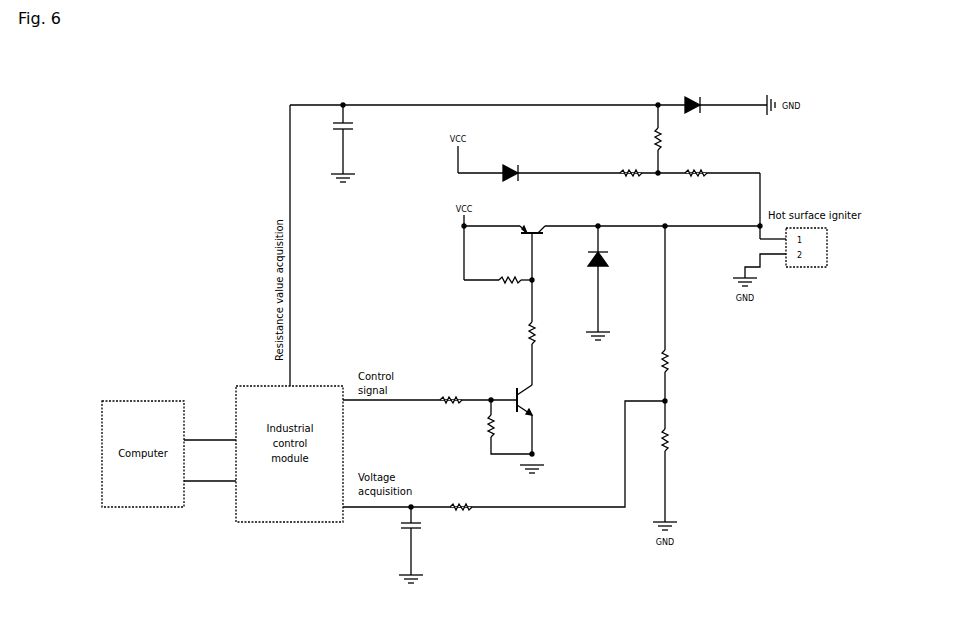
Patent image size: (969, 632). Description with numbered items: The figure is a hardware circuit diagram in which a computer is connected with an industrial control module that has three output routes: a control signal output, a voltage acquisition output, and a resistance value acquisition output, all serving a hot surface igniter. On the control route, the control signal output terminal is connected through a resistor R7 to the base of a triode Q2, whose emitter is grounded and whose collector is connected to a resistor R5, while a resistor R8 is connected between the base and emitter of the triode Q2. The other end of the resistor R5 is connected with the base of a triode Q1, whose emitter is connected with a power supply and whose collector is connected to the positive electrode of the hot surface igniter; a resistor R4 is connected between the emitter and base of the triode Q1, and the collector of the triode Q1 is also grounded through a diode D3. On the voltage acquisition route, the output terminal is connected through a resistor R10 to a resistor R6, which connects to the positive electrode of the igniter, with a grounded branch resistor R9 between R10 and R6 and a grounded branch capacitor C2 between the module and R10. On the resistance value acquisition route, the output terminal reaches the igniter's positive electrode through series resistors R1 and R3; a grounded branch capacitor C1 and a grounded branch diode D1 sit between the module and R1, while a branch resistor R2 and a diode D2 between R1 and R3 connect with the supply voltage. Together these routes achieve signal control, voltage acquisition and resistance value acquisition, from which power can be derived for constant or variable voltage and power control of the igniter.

The branch connection capacitor C1 is at (350, 152).
The branch connection capacitor C2 is at (417, 553).
The resistor R1 is at (665, 139).
The branch connector resistor R2 is at (631, 167).
The resistor R3 is at (696, 167).
The resistor R4 is at (499, 275).
The resistor R5 is at (539, 353).
The resistor R6 is at (672, 361).
The resistor R7 is at (451, 395).
The resistor R8 is at (510, 427).
The branch connection resistor R9 is at (672, 440).
The resistor R10 is at (461, 501).
The branch connection diode D1 is at (690, 97).
The diode D2 is at (510, 164).
The diode D3 is at (604, 291).
The triode Q1 is at (531, 265).
The triode Q2 is at (537, 438).